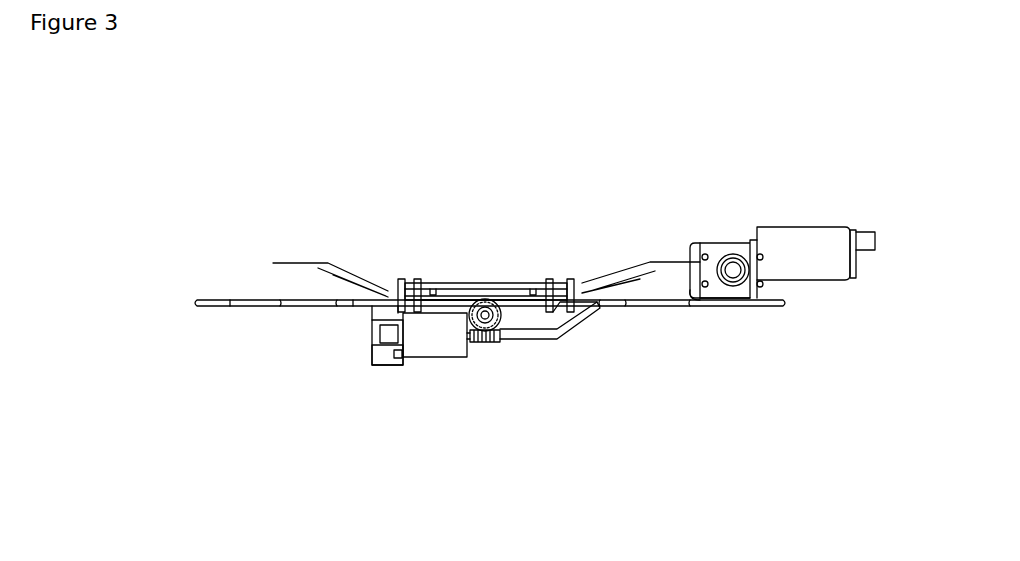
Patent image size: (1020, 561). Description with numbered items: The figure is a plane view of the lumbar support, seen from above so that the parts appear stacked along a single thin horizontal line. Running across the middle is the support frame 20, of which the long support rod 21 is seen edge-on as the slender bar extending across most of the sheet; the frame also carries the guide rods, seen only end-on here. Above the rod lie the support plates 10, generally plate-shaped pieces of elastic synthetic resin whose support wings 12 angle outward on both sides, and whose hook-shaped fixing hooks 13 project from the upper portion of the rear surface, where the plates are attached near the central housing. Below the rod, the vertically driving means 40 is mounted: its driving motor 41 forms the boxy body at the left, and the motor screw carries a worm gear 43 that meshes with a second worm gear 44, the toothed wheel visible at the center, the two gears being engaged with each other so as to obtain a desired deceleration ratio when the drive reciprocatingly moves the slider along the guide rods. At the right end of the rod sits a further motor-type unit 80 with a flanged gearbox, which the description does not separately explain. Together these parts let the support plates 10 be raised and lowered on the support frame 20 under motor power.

The support plate 10 is at (604, 262).
The support wing 12 is at (323, 262).
The fixing hook 13 is at (418, 276).
The support frame 20 is at (262, 305).
The support rod 21 is at (608, 307).
The vertically driving means 40 is at (478, 362).
The driving motor 41 is at (430, 358).
The worm gear 43 is at (500, 331).
The worm gear 44 is at (497, 308).
The drive motor 80 is at (815, 218).